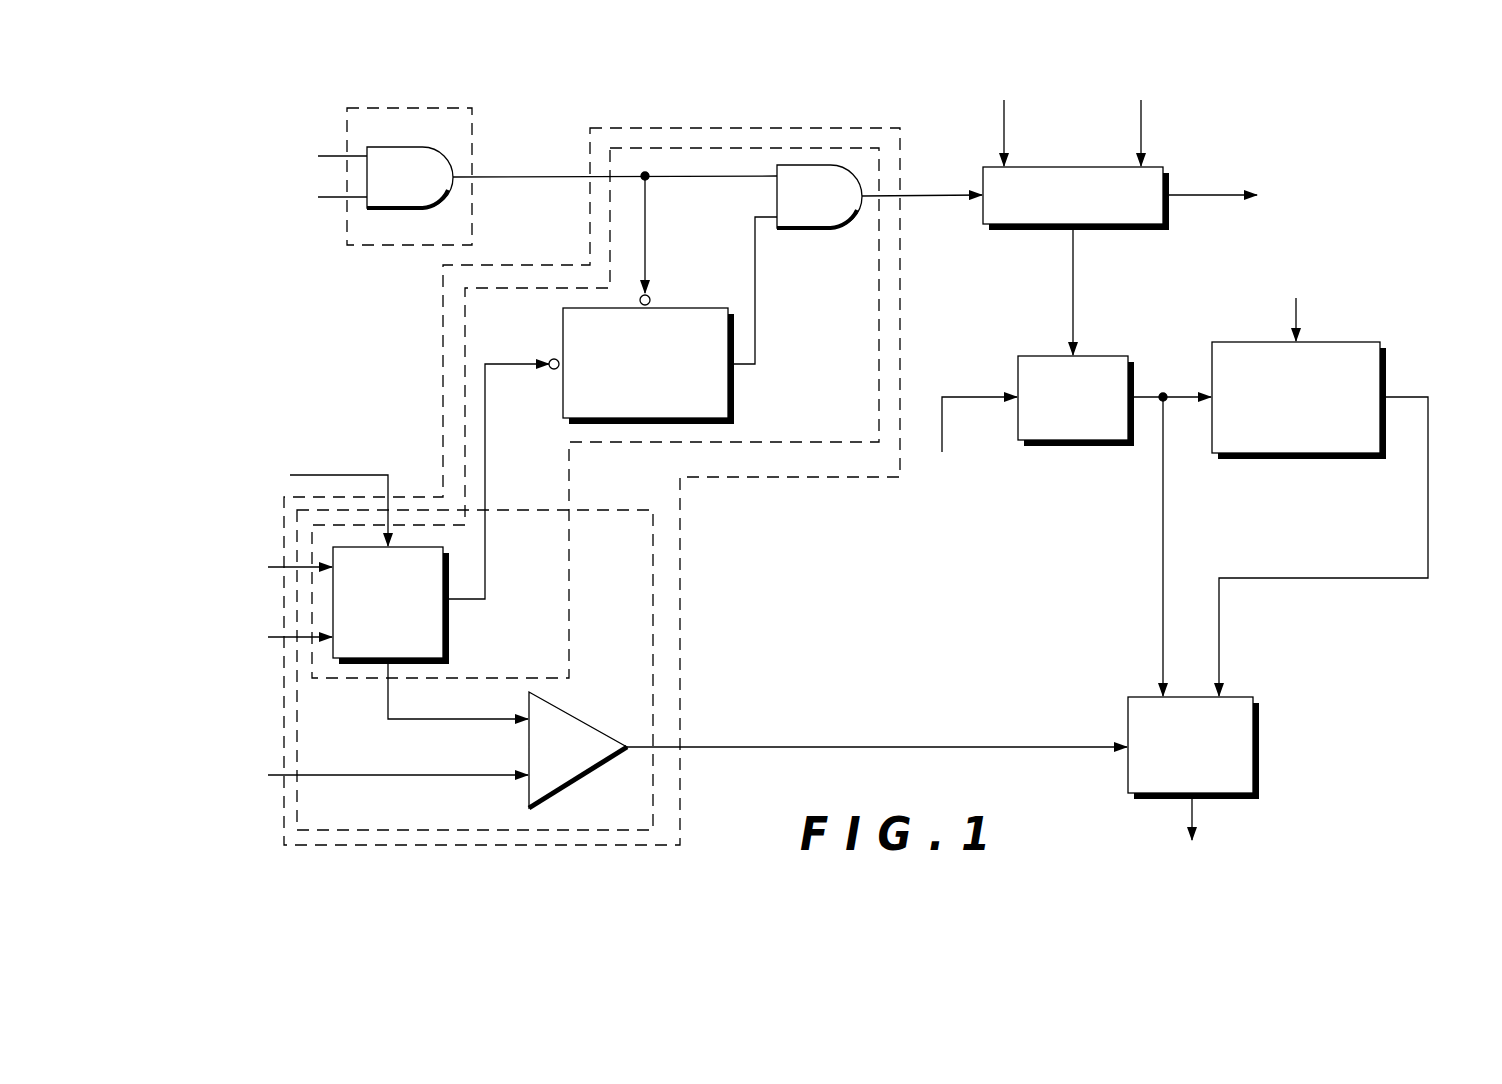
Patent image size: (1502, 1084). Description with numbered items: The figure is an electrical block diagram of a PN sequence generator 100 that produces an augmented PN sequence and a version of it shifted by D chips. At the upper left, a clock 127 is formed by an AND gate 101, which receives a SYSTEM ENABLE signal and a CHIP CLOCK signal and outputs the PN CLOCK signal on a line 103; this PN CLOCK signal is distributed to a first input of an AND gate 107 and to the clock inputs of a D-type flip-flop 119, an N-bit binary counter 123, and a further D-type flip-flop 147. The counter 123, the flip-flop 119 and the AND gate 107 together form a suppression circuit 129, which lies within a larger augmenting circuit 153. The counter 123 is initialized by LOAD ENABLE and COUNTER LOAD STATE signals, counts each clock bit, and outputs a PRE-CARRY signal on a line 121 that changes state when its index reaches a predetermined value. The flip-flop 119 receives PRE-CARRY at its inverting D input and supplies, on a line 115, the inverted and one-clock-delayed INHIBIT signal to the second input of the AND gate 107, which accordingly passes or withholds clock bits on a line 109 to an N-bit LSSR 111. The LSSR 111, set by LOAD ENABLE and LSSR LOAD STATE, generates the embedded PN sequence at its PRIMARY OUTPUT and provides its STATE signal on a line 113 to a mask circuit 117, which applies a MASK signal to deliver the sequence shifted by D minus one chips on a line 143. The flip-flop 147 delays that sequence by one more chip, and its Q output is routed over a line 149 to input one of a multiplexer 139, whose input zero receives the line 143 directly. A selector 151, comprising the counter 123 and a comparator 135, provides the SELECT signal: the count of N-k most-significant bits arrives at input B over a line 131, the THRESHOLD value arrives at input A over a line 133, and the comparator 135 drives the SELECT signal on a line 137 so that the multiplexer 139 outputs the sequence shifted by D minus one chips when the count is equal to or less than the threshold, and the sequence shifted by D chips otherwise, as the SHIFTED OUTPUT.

The PN sequence generator 100 is at (1426, 102).
The AND gate 101 is at (405, 208).
The line 103 is at (568, 178).
The AND gate 107 is at (797, 228).
The line 109 is at (918, 200).
The N-bit LSSR 111 is at (1168, 167).
The line 113 is at (1076, 280).
The line 115 is at (757, 290).
The mask circuit 117 is at (1032, 356).
The D-type flip-flop 119 is at (735, 378).
The line 121 is at (487, 465).
The N-bit binary counter 123 is at (449, 574).
The clock 127 is at (420, 108).
The suppression circuit 129 is at (803, 148).
The line 131 is at (388, 695).
The line 133 is at (330, 778).
The comparator 135 is at (572, 712).
The line 137 is at (993, 745).
The multiplexer 139 is at (1240, 697).
The line 143 is at (1143, 397).
The D-type flip-flop 147 is at (1338, 342).
The delay line 149 is at (1428, 485).
The selector 151 is at (680, 585).
The augmenting circuit 153 is at (683, 128).